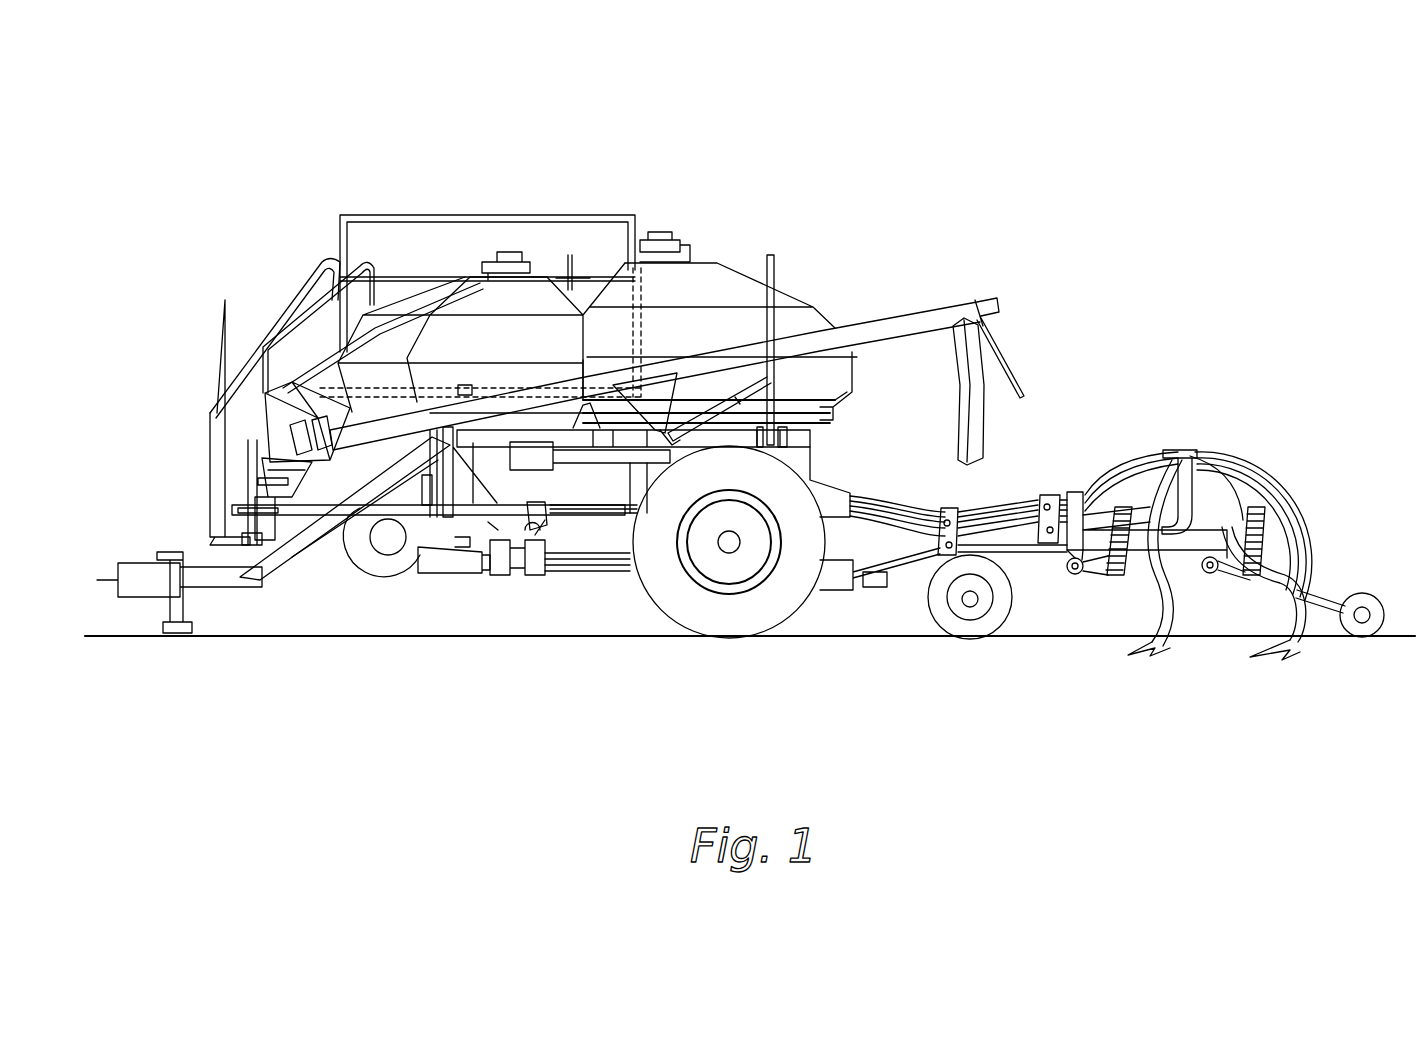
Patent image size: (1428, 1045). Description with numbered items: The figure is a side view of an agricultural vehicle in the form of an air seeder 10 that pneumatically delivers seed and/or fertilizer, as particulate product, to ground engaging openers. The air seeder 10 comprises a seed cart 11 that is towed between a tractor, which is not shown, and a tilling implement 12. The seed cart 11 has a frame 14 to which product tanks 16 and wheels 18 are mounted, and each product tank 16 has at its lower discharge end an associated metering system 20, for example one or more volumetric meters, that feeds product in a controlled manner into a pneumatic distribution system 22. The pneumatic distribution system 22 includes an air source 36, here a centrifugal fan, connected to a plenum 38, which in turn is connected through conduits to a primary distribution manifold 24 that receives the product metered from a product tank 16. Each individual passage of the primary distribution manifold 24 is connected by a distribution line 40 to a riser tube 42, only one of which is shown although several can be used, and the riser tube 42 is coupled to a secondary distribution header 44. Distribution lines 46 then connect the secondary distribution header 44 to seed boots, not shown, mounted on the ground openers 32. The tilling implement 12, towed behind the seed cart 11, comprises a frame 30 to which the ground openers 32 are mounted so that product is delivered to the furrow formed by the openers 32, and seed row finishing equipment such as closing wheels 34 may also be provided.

The air seeder 10 is at (1064, 201).
The seed cart 11 is at (712, 186).
The tilling implement 12 is at (1230, 311).
The frame 14 is at (278, 548).
The product tanks 16 is at (432, 300).
The wheels 18 is at (740, 612).
The metering system 20 is at (520, 550).
The pneumatic distribution system 22 is at (460, 606).
The primary distribution manifold 24 is at (505, 580).
The frame 30 is at (1185, 545).
The ground openers 32 is at (1140, 652).
The closing wheels 34 is at (1366, 605).
The air source 36 is at (385, 563).
The plenum 38 is at (440, 570).
The distribution line 40 is at (906, 480).
The riser tube 42 is at (1235, 465).
The secondary distribution header 44 is at (1185, 455).
The distribution lines 46 is at (1110, 480).